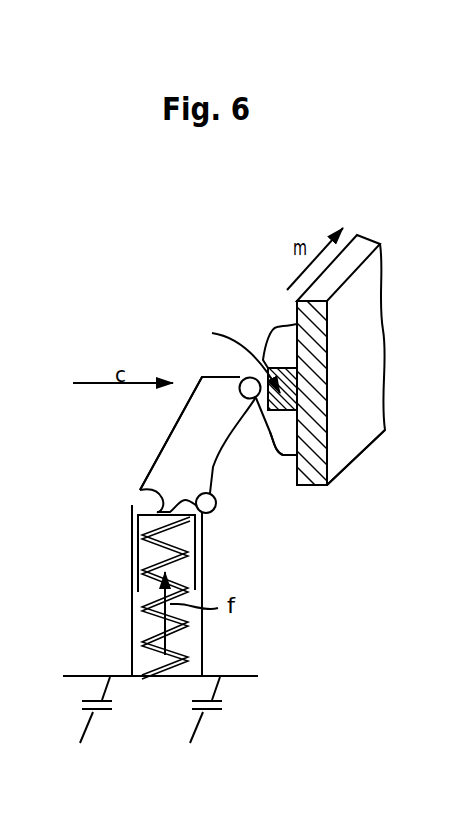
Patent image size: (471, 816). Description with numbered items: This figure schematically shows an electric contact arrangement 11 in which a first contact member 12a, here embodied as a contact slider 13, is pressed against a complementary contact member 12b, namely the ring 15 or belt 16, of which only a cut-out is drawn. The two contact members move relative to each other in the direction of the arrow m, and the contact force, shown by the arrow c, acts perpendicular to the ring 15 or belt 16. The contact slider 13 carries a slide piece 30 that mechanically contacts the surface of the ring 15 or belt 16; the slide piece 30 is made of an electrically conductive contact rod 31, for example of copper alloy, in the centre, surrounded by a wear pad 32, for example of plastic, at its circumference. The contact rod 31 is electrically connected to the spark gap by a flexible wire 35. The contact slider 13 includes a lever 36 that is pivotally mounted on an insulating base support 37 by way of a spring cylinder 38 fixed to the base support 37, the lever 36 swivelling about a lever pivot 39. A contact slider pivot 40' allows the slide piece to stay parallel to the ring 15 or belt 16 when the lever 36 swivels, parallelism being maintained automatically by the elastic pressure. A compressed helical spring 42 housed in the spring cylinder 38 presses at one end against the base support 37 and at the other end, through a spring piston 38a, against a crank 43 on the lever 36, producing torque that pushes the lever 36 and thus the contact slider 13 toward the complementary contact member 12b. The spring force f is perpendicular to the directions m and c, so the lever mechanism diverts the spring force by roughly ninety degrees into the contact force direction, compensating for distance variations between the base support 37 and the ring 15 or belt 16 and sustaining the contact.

The electric contact arrangement 11 is at (368, 215).
The first contact member 12a is at (158, 391).
The contact slider 13 is at (178, 367).
The complementary contact member 12b is at (397, 474).
The ring 15 is at (397, 474).
The belt 16 is at (348, 445).
The slide piece 30 is at (258, 428).
The contact rod 31 is at (295, 373).
The wear pad 32 is at (283, 441).
The flexible wire 35 is at (228, 328).
The lever 36 is at (200, 457).
The base support 37 is at (242, 676).
The spring cylinder 38 is at (202, 632).
The spring piston 38a is at (138, 553).
The lever pivot 39 is at (215, 513).
The contact slider pivot 40' is at (193, 402).
The spring 42 is at (150, 631).
The crank 43 is at (140, 490).